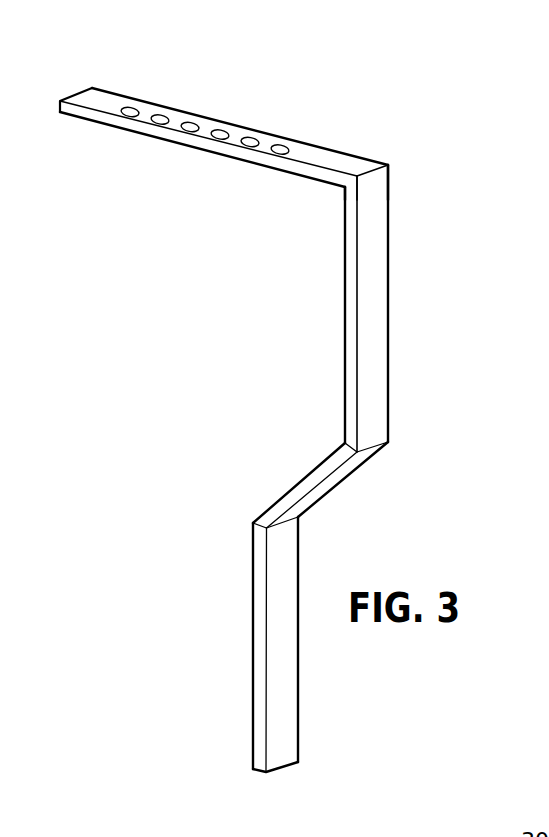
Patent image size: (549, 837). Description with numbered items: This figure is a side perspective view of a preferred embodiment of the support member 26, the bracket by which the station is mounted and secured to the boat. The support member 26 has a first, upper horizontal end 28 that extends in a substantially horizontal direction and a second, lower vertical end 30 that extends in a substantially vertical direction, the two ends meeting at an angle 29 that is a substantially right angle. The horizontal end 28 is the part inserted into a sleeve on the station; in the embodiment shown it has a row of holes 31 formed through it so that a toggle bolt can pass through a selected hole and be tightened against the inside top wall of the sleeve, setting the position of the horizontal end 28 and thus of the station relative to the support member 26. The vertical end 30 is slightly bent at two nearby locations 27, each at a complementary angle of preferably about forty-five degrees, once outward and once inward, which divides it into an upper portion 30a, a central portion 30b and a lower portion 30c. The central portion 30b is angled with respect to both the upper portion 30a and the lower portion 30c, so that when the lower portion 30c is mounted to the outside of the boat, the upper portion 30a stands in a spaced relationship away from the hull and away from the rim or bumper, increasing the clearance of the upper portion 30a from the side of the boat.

The support member 26 is at (287, 393).
The bend locations 27 is at (360, 468).
The horizontal end 28 is at (224, 101).
The angle 29 is at (388, 165).
The vertical end 30 is at (321, 468).
The upper portion 30a is at (347, 277).
The central portion 30b is at (288, 500).
The lower portion 30c is at (256, 592).
The holes 31 is at (249, 137).